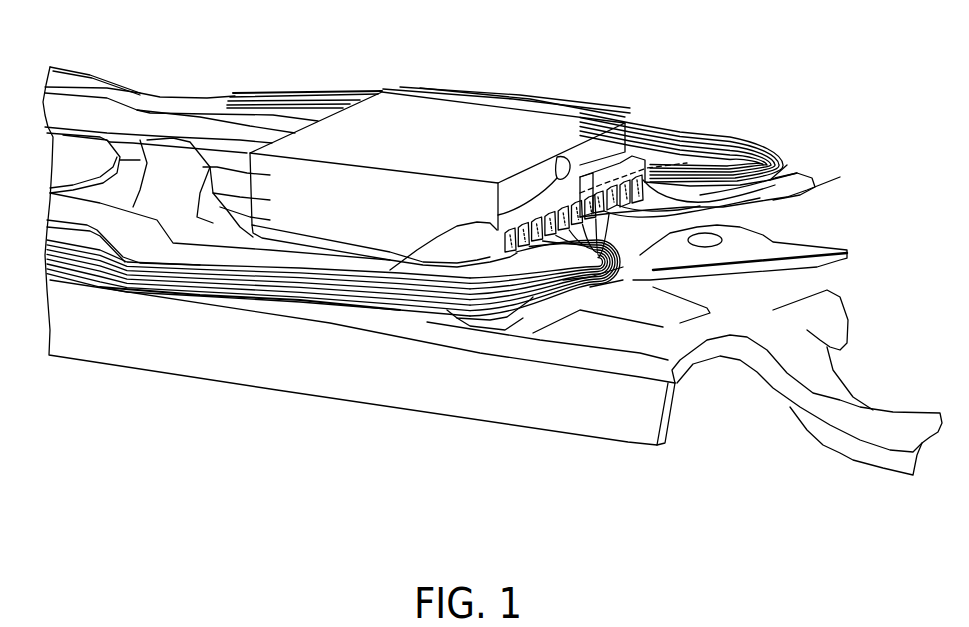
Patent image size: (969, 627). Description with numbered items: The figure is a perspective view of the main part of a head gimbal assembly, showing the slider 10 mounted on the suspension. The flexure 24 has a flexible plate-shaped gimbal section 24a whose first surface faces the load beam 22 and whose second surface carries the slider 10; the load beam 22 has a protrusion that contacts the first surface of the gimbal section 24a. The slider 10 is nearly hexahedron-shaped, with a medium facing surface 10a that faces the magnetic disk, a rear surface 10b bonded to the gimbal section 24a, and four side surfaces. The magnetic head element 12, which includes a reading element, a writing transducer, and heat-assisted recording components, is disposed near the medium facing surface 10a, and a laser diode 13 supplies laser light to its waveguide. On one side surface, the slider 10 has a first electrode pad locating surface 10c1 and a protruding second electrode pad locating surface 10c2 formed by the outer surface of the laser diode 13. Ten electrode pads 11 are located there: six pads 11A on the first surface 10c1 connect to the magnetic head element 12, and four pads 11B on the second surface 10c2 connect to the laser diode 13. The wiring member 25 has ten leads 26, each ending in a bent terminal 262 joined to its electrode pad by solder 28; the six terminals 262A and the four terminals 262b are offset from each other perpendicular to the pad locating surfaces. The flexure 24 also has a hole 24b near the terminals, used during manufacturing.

The slider 10 is at (405, 92).
The medium facing surface 10a is at (450, 112).
The rear surface 10b is at (297, 237).
The first electrode pad locating surface 10c1 is at (545, 173).
The second electrode pad locating surface 10c2 is at (617, 177).
The electrode pads 11 is at (570, 249).
The electrode pads on first electrode pad locating surface 11A is at (497, 230).
The electrode pads on second electrode pad locating surface 11B is at (677, 167).
The magnetic head element 12 is at (560, 208).
The laser diode 13 is at (653, 170).
The load beam 22 is at (623, 446).
The flexure 24 is at (848, 242).
The gimbal section 24a is at (323, 250).
The hole 24b is at (797, 173).
The wiring member 25 is at (278, 92).
The leads 26 is at (765, 135).
The solder 28 is at (470, 262).
The terminal 262 is at (651, 292).
The terminals connected to first electrode pads 262A is at (540, 307).
The terminals connected to second electrode pads 262b is at (725, 137).